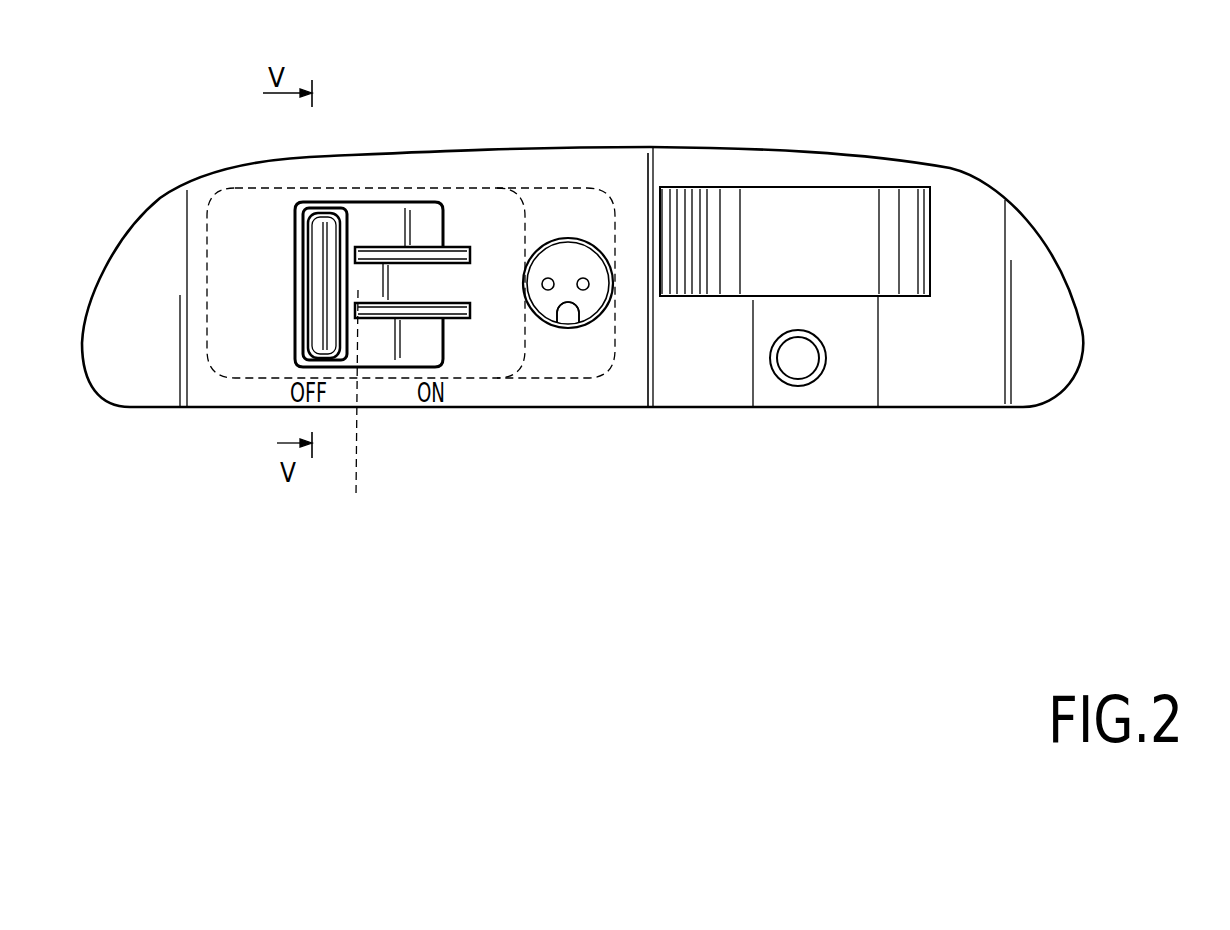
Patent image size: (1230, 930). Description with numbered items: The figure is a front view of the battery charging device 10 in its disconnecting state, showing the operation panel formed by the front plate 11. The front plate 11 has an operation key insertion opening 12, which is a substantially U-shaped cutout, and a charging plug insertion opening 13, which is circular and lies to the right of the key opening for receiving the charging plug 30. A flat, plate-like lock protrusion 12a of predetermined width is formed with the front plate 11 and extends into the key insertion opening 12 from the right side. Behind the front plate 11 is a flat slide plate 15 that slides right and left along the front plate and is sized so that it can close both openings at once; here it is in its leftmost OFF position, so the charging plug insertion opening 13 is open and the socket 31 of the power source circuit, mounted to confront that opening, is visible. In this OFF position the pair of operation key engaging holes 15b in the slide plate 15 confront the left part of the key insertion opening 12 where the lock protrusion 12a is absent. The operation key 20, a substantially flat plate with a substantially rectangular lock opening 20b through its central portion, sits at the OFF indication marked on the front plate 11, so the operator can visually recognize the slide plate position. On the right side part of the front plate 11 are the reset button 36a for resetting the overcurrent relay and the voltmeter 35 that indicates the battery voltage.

The battery charging device 10 is at (760, 137).
The front plate 11 is at (705, 373).
The operation key insertion opening 12 is at (318, 278).
The lock protrusion 12a is at (400, 293).
The charging plug insertion opening 13 is at (575, 318).
The slide plate 15 is at (378, 213).
The operation key engaging holes 15b is at (311, 200).
The operation key 20 is at (320, 313).
The lock opening 20b is at (358, 290).
The charging plug 30 is at (608, 181).
The socket 31 is at (567, 263).
The voltmeter 35 is at (870, 227).
The reset button 36a is at (800, 357).